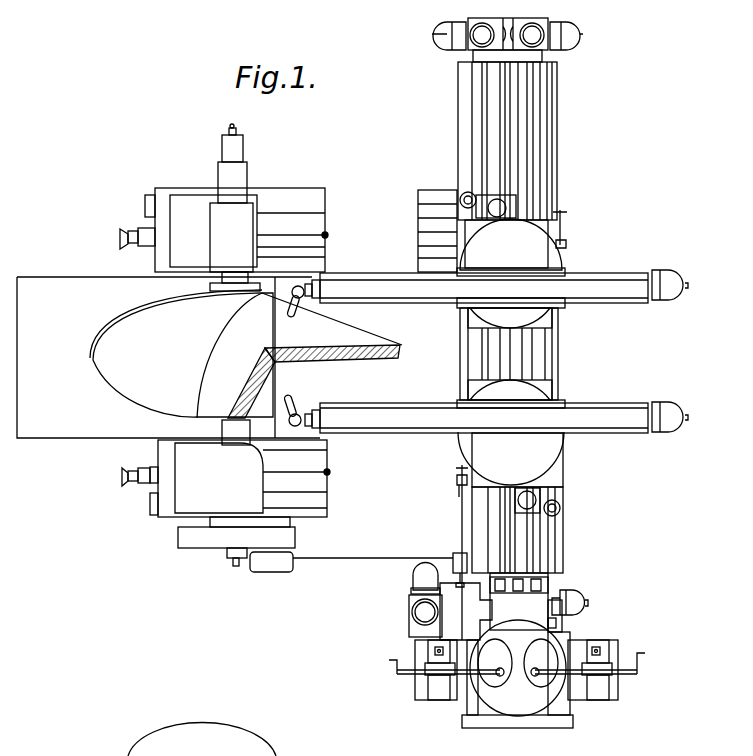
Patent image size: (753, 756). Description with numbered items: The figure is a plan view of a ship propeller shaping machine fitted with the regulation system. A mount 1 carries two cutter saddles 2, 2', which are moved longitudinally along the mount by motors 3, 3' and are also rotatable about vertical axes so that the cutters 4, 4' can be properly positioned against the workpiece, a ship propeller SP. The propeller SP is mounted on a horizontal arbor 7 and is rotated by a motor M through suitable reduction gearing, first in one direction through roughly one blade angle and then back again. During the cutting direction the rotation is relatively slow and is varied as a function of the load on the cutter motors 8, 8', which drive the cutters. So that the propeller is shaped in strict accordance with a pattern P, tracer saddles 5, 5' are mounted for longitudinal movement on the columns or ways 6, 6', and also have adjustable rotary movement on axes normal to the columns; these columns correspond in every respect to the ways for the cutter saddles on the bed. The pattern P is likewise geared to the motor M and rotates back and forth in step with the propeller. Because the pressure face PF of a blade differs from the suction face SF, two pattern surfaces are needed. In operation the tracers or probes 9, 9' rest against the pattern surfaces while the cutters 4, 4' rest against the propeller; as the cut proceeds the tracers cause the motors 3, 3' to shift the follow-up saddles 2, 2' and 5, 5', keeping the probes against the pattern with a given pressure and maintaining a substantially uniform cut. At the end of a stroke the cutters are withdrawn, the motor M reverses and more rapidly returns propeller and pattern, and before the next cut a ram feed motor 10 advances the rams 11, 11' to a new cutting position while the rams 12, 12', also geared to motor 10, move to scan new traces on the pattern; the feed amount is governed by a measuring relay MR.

The mount 1 is at (558, 155).
The cutter saddle 2 is at (511, 459).
The cutter saddle 2' is at (511, 247).
The motor 3 is at (578, 45).
The motor 3' is at (436, 53).
The cutter 4 is at (306, 403).
The cutter 4' is at (307, 315).
The tracer saddle 5 is at (597, 692).
The tracer saddle 5' is at (427, 689).
The column 6 is at (619, 642).
The column 6' is at (415, 647).
The horizontal arbor 7 is at (248, 176).
The cutter motor 8 is at (674, 432).
The cutter motor 8' is at (670, 303).
The tracer 9 is at (535, 656).
The tracer 9' is at (500, 674).
The ram feed motor 10 is at (578, 592).
The ram 11 is at (476, 438).
The ram 11' is at (476, 305).
The ram 12 is at (605, 677).
The ram 12' is at (433, 682).
The motor M is at (411, 582).
The measuring relay MR is at (556, 623).
The pattern P is at (517, 712).
The pressure face PF is at (398, 346).
The ship propeller SP is at (93, 362).
The suction face SF is at (134, 402).